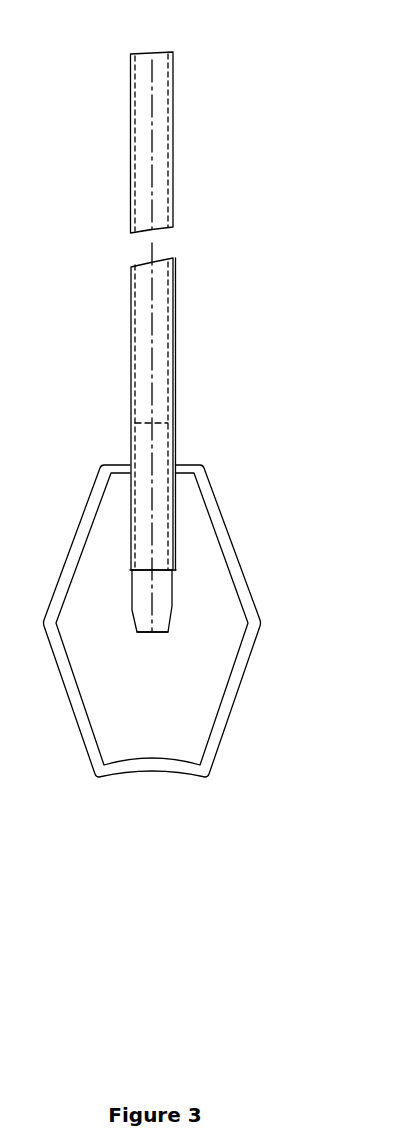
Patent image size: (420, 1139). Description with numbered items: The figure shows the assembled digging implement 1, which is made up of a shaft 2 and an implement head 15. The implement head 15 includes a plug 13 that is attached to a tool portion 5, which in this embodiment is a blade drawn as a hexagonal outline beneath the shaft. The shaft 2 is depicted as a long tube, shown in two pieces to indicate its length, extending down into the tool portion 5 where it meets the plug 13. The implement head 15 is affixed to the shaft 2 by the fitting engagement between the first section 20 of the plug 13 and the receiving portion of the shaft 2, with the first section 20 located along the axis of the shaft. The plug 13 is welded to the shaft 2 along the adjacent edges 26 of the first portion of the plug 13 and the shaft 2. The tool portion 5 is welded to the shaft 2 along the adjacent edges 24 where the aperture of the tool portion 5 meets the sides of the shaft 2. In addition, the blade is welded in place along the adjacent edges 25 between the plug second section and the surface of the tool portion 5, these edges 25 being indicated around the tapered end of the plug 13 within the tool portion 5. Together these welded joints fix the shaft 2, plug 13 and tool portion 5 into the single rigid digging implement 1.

The digging implement 1 is at (258, 121).
The shaft 2 is at (177, 321).
The first section of the plug 20 is at (160, 467).
The adjacent edges of the tool portion aperture and the sides of the shaft 24 is at (131, 537).
The adjacent edges of the first portion of the plug and the shaft 26 is at (158, 572).
The plug 13 is at (142, 596).
The adjacent edges of the plug second section and tool portion surface 25 is at (129, 597).
The implement head 15 is at (232, 505).
The tool portion 5 is at (151, 721).